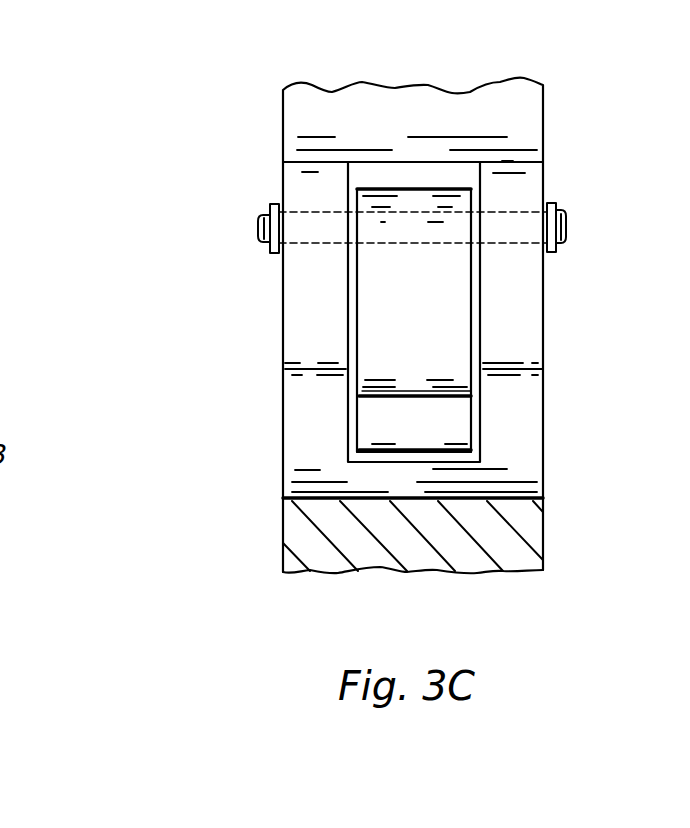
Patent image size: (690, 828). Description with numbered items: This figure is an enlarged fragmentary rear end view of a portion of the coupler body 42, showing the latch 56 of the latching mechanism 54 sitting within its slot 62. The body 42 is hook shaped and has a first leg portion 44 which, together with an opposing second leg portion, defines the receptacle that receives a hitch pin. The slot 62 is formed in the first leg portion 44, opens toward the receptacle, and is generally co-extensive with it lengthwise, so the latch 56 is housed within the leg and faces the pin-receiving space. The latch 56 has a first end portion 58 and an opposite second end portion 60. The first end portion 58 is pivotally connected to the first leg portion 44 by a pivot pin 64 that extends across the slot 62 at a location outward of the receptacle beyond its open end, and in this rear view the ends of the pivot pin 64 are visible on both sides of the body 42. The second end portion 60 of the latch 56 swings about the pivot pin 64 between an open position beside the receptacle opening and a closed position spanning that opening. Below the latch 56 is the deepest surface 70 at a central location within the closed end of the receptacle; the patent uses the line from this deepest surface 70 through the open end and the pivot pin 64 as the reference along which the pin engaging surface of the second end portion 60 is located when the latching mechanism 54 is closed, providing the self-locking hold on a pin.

The body 42 is at (282, 114).
The first leg portion 44 is at (368, 294).
The latching mechanism 54 is at (421, 189).
The latch 56 is at (453, 187).
The first end portion 58 is at (375, 187).
The second end portion 60 is at (387, 340).
The slot 62 is at (480, 404).
The pivot pin 64 is at (566, 230).
The deepest surface 70 is at (510, 498).